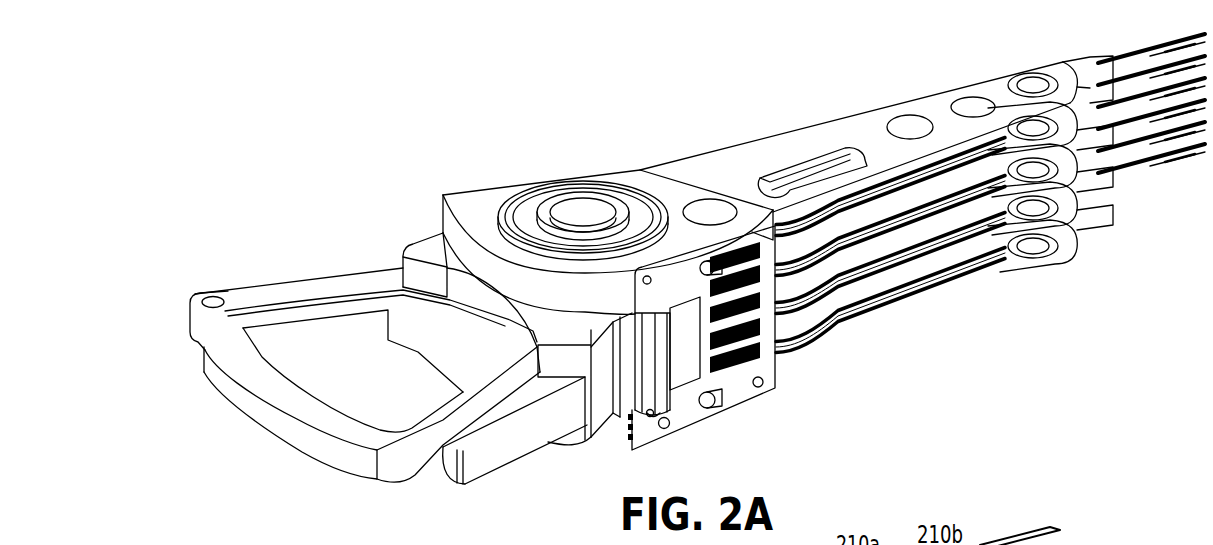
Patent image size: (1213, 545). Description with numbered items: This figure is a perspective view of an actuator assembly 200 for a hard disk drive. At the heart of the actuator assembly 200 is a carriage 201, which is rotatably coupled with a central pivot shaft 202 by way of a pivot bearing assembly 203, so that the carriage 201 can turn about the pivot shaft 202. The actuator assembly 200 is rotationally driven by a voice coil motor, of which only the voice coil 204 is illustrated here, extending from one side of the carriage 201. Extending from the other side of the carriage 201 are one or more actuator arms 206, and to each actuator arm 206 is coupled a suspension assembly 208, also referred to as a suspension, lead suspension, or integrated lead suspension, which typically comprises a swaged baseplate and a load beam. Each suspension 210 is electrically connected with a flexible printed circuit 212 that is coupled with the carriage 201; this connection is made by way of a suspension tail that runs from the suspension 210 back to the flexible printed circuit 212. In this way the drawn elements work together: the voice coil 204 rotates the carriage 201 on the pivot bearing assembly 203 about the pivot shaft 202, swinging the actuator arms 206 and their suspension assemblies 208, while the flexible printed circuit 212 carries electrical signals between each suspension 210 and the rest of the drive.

The actuator assembly 200 is at (256, 150).
The carriage 201 is at (483, 198).
The central pivot shaft 202 is at (583, 210).
The pivot bearing assembly 203 is at (637, 197).
The voice coil 204 is at (333, 310).
The actuator arm 206 is at (796, 152).
The suspension assembly 208 is at (1124, 63).
The suspension 210 is at (923, 212).
The flexible printed circuit 212 is at (688, 413).